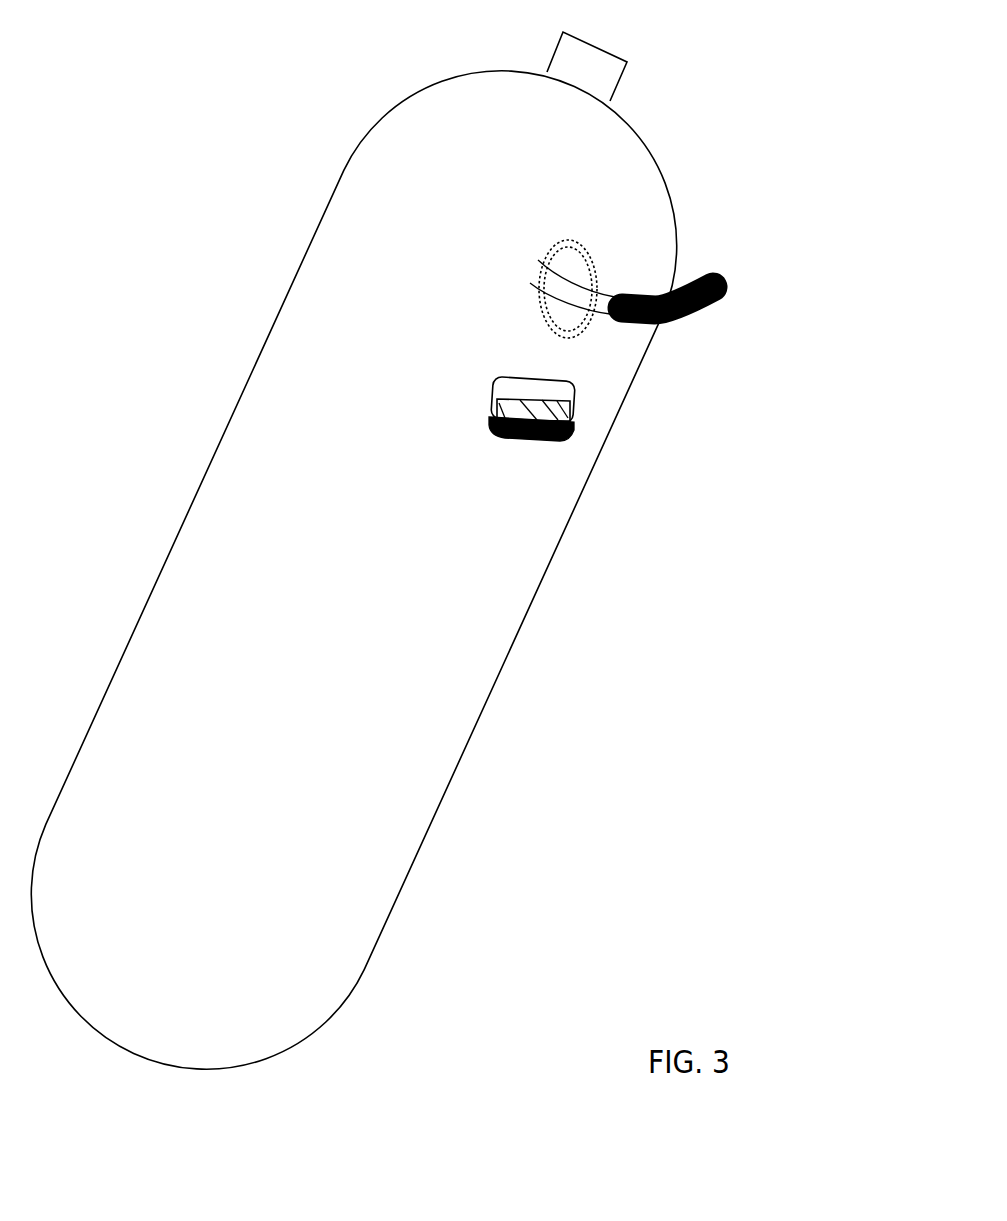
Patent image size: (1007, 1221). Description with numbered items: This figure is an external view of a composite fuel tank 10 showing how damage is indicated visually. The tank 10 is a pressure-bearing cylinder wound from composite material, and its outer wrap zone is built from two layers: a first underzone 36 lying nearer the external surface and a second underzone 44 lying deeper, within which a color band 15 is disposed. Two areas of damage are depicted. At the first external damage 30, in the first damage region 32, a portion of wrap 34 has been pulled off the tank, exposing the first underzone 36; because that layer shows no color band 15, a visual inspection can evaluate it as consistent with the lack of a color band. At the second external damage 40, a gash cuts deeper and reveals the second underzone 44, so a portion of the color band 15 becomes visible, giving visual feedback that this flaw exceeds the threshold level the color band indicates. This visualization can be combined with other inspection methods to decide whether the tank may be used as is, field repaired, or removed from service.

The tank 10 is at (205, 400).
The color band 15 is at (560, 408).
The first external damage 30 is at (605, 256).
The first damage region 32 is at (593, 267).
The portion of wrap 34 is at (697, 311).
The first underzone 36 is at (560, 289).
The second external damage 40 is at (528, 384).
The second underzone 44 is at (510, 387).